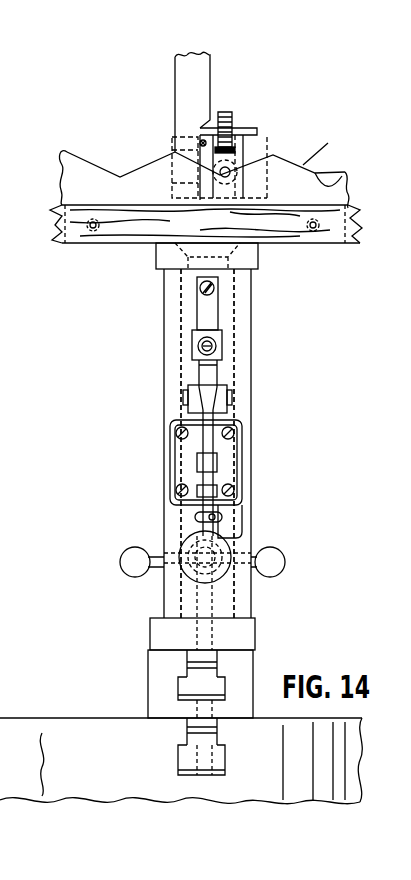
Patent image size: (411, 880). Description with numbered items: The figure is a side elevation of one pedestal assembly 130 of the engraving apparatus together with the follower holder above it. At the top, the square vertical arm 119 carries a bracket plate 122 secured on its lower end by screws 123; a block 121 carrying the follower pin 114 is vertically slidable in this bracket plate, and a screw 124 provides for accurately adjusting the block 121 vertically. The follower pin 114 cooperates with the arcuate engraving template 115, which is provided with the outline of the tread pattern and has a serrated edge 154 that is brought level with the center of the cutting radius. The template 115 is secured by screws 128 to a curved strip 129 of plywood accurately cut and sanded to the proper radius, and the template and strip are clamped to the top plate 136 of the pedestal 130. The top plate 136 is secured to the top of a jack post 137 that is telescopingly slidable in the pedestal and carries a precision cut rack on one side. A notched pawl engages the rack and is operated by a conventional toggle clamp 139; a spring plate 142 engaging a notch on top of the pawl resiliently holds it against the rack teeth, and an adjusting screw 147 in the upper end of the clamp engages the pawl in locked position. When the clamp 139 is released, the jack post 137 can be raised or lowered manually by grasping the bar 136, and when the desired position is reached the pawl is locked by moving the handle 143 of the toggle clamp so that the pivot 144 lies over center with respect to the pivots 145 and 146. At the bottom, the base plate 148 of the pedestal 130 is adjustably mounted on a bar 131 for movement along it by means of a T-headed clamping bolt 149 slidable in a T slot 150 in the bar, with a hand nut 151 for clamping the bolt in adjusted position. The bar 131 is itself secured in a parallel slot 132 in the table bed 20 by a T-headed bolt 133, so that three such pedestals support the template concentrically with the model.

The square vertical arm 119 is at (186, 73).
The screw 124 is at (238, 104).
The bracket plate 122 is at (247, 128).
The block 121 is at (236, 150).
The screws 123 is at (177, 134).
The arcuate template 115 is at (62, 183).
The follower pin 114 is at (230, 173).
The serrated edge 154 is at (349, 183).
The screws 128 is at (92, 233).
The top plate 136 is at (158, 262).
The curved strip 129 is at (331, 236).
The spring plate 142 is at (204, 308).
The jack post 137 is at (236, 327).
The adjusting screw 147 is at (212, 347).
The pedestal 130 is at (251, 416).
The pivot 146 is at (172, 423).
The pivot 144 is at (196, 462).
The toggle clamp 139 is at (224, 469).
The pivot 145 is at (196, 492).
The handle 143 is at (196, 511).
The hand nut 151 is at (282, 560).
The base plate 148 is at (152, 633).
The bar 131 is at (246, 661).
The T slot 150 is at (188, 668).
The T-headed clamping bolt 149 is at (180, 688).
The bed 20 is at (75, 720).
The slot 132 is at (188, 739).
The T-headed bolt 133 is at (219, 760).